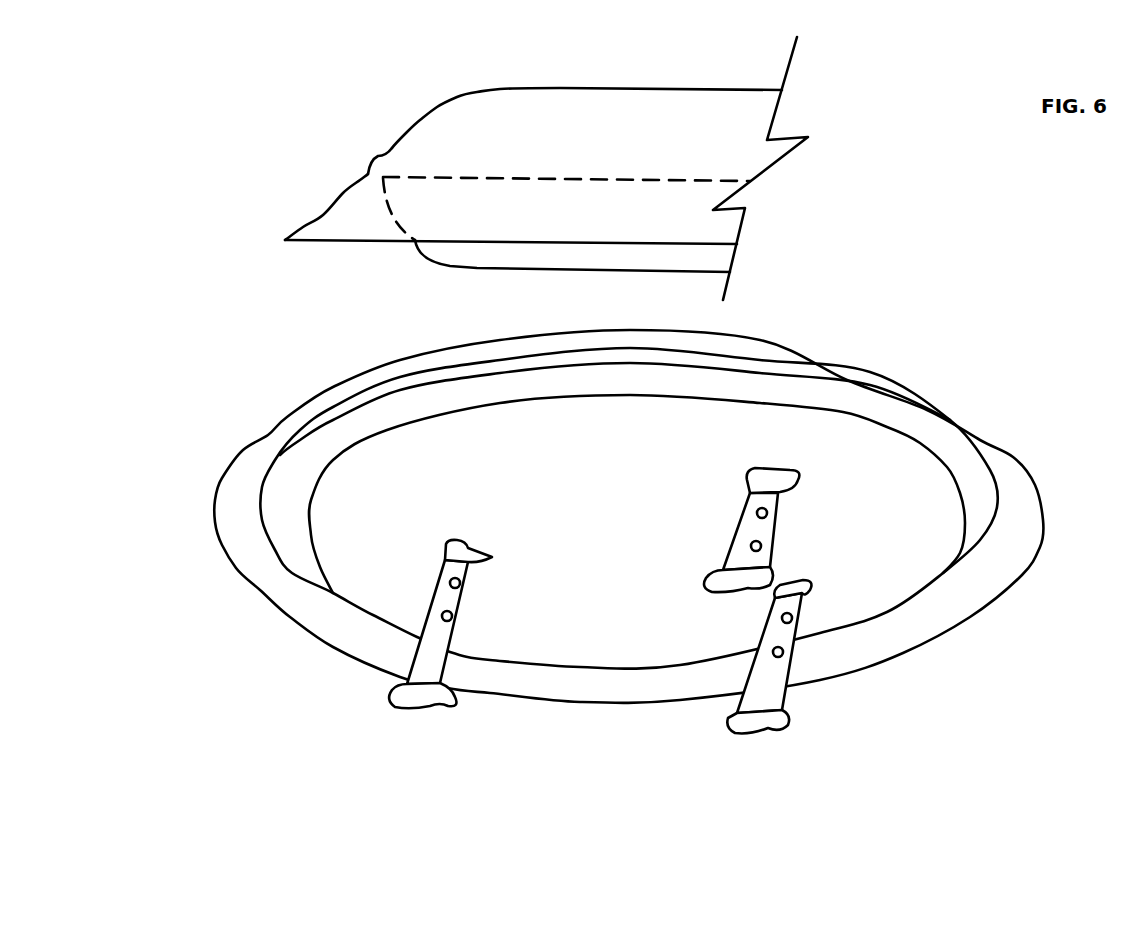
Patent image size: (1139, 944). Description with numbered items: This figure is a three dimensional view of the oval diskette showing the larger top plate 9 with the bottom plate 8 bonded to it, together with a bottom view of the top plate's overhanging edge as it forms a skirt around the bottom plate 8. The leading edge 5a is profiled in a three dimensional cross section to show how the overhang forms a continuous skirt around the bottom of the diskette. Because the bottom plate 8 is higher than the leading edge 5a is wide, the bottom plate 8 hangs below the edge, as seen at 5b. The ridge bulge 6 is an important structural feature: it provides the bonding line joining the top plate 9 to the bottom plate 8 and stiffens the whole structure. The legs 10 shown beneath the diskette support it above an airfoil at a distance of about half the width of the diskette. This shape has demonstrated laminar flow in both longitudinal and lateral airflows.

The leading edge 5a is at (323, 215).
The edge below which the bottom plate hangs 5b is at (257, 555).
The ridge bulge 6 is at (370, 160).
The bottom plate 8 is at (482, 253).
The top plate 9 is at (450, 103).
The legs 10 is at (778, 727).